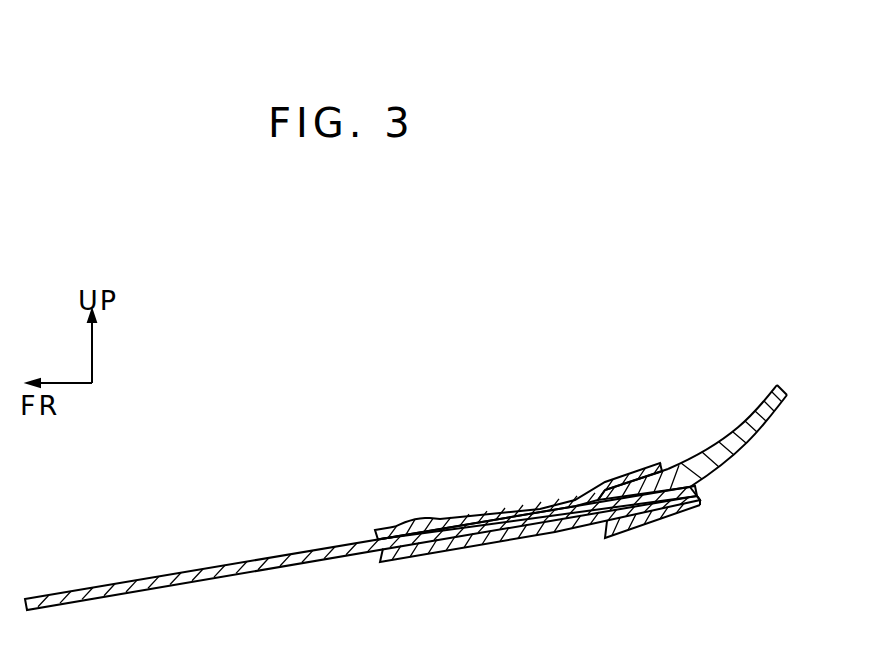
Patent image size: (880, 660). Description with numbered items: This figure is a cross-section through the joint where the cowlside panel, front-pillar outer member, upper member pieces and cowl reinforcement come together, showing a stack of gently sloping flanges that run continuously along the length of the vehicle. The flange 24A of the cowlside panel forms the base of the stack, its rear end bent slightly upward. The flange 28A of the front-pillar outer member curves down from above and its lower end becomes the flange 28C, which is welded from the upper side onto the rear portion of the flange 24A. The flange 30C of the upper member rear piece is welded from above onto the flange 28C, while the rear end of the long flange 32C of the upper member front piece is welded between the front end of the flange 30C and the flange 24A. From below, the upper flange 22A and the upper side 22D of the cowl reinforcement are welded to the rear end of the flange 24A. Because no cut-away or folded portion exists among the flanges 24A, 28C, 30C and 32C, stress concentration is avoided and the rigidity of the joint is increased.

The flange 32C is at (268, 568).
The flange 30C is at (609, 493).
The flange 28C is at (645, 470).
The flange 28A is at (756, 433).
The flange 24A is at (701, 488).
The upper side 22D is at (667, 518).
The upper flange 22A is at (620, 535).